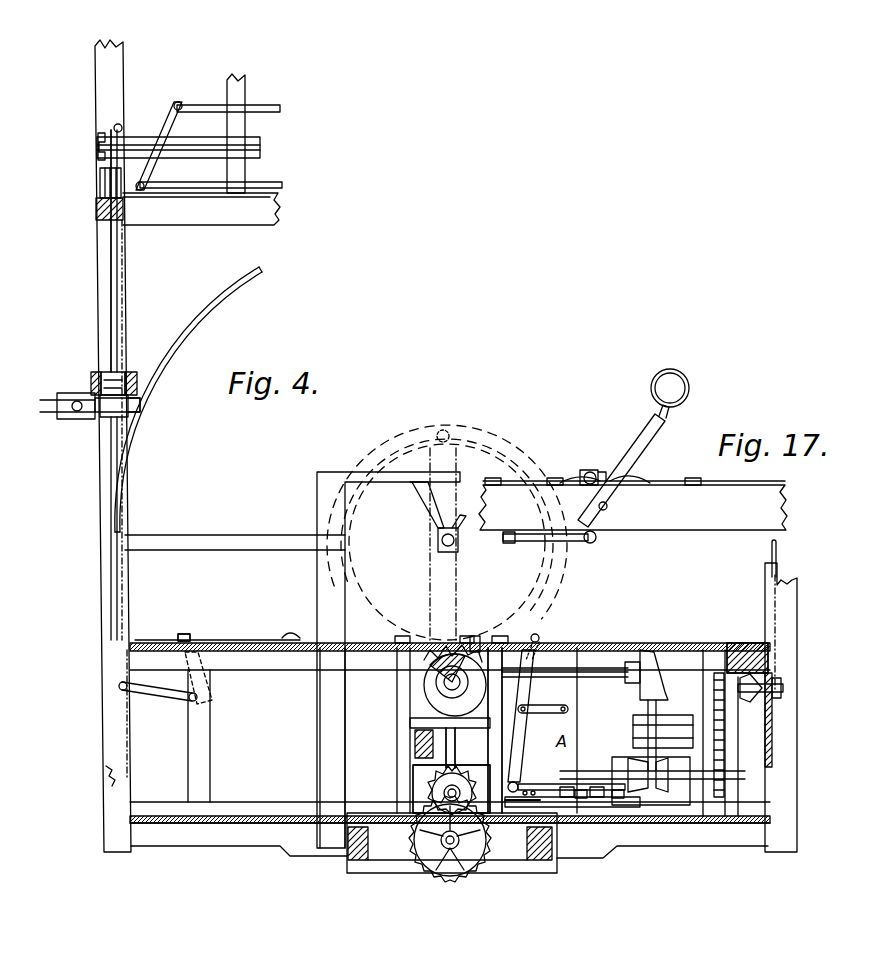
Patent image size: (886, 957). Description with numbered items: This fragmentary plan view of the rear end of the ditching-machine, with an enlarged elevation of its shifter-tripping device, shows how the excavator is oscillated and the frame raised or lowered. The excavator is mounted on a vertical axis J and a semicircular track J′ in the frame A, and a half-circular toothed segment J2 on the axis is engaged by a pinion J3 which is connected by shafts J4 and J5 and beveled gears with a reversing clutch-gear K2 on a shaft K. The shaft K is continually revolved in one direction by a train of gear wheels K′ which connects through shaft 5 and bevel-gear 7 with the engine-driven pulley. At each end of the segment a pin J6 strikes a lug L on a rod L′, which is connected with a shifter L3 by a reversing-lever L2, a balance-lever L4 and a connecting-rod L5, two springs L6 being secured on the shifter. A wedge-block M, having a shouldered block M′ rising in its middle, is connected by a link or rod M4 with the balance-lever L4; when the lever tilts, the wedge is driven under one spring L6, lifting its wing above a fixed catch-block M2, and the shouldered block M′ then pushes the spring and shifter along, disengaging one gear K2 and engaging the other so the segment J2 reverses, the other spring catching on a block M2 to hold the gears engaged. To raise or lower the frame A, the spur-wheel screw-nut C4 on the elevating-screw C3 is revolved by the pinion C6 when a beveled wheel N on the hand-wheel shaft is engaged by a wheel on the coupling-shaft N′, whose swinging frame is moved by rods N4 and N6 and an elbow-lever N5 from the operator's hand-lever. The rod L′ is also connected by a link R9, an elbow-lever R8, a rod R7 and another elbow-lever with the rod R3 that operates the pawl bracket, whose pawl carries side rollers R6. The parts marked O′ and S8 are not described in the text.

In FIG. 4, the frame A is at (104, 598).
In FIG. 4, the rod R3 is at (202, 149).
In FIG. 4, the side rollers R6 is at (142, 135).
In FIG. 4, the rod R7 is at (122, 252).
In FIG. 4, the elbow-lever R8 is at (165, 691).
In FIG. 4, the link R9 is at (213, 629).
In FIG. 4, the rod O′ is at (184, 138).
In FIG. 4, the rod S8 is at (111, 297).
In FIG. 4, the semicircular track J′ is at (188, 399).
In FIG. 4, the vertical axis J is at (436, 541).
In FIG. 4, the half-circular toothed segment J2 is at (398, 634).
In FIG. 4, the pinion J3 is at (424, 680).
In FIG. 4, the shaft J4 is at (586, 677).
In FIG. 4, the shaft J5 is at (663, 735).
In FIG. 4, the pin J6 is at (441, 430).
In FIG. 4, the lug L is at (473, 632).
In FIG. 4, the rod L′ is at (410, 628).
In FIG. 4, the reversing-lever L2 is at (512, 721).
In FIG. 17, the shifter L3 is at (695, 478).
In FIG. 4, the balance-lever L4 is at (620, 790).
In FIG. 17, the balance-lever L4 is at (633, 448).
In FIG. 4, the connecting-rod L5 is at (571, 777).
In FIG. 17, the connecting-rod L5 is at (566, 550).
In FIG. 4, the springs L6 is at (546, 800).
In FIG. 17, the springs L6 is at (566, 481).
In FIG. 17, the wedge-block M is at (583, 469).
In FIG. 4, the shouldered block M′ is at (572, 806).
In FIG. 17, the shouldered block M′ is at (594, 461).
In FIG. 4, the catch-block M2 is at (450, 833).
In FIG. 4, the link or rod M4 is at (598, 790).
In FIG. 17, the link or rod M4 is at (592, 498).
In FIG. 4, the beveled wheel N is at (466, 785).
In FIG. 4, the coupling-shaft N′ is at (462, 748).
In FIG. 4, the rod N4 is at (596, 745).
In FIG. 4, the elbow-lever N5 is at (586, 730).
In FIG. 4, the rod N6 is at (783, 696).
In FIG. 4, the shaft K is at (720, 734).
In FIG. 4, the train of gear wheels K′ is at (737, 735).
In FIG. 4, the reversing clutch-gear K2 is at (652, 788).
In FIG. 4, the elevating-screw C3 is at (447, 844).
In FIG. 4, the screw-nut C4 is at (452, 851).
In FIG. 4, the pinion C6 is at (426, 790).
In FIG. 4, the shaft 5 is at (799, 623).
In FIG. 4, the bevel-gear 7 is at (764, 677).